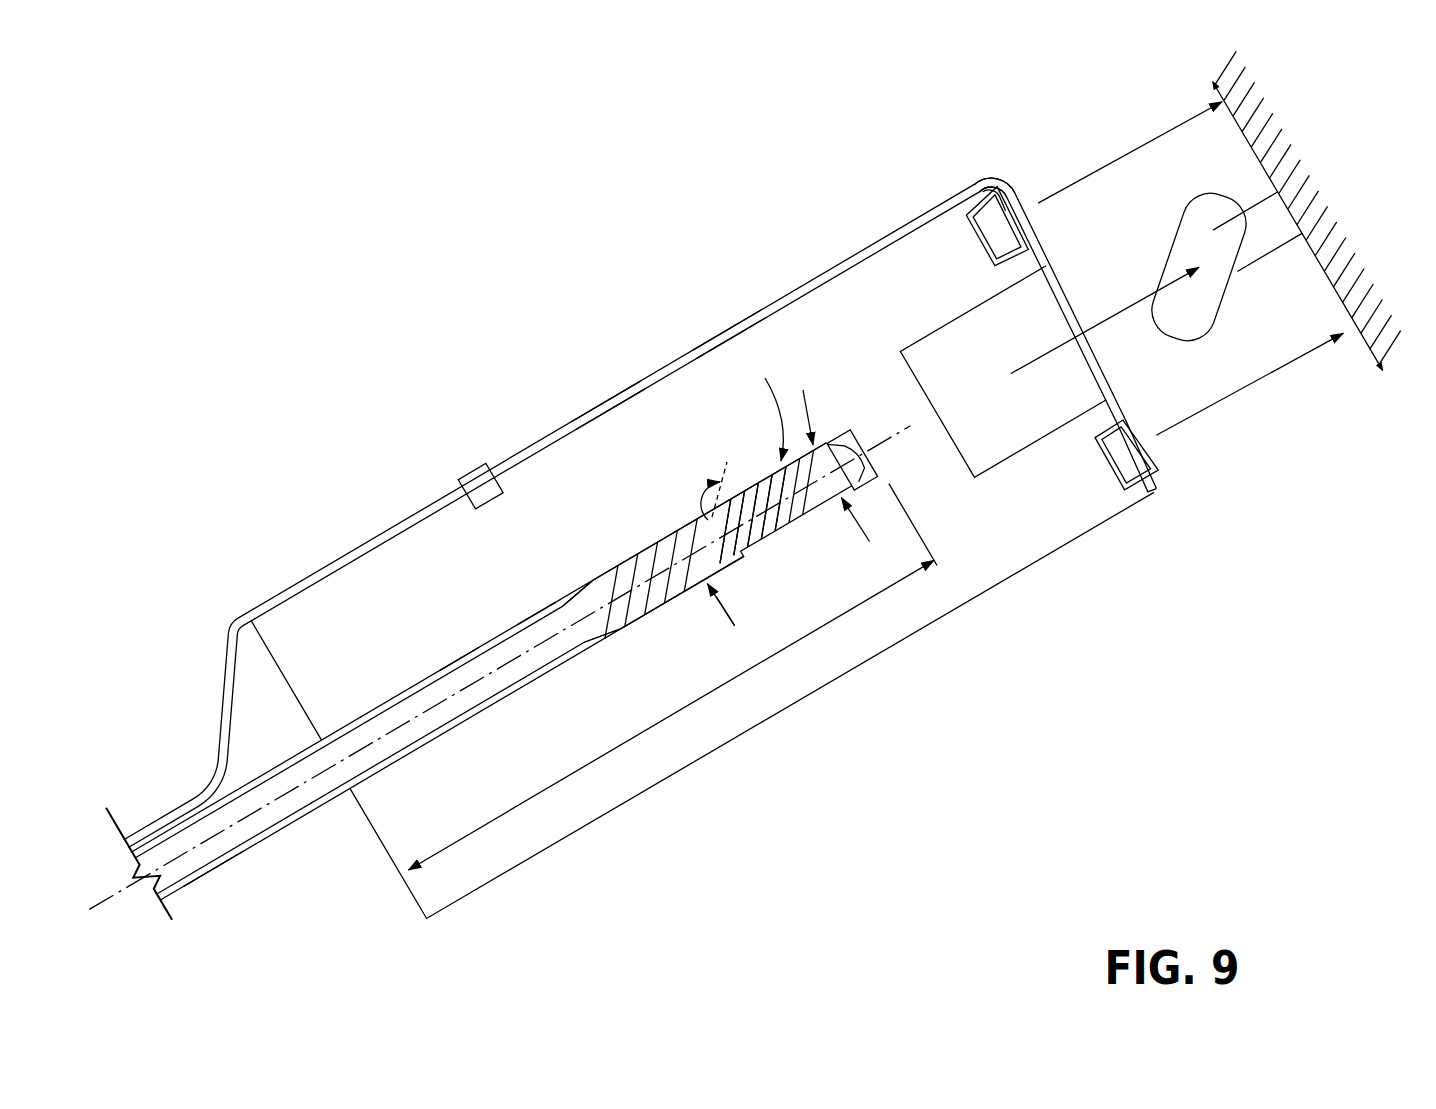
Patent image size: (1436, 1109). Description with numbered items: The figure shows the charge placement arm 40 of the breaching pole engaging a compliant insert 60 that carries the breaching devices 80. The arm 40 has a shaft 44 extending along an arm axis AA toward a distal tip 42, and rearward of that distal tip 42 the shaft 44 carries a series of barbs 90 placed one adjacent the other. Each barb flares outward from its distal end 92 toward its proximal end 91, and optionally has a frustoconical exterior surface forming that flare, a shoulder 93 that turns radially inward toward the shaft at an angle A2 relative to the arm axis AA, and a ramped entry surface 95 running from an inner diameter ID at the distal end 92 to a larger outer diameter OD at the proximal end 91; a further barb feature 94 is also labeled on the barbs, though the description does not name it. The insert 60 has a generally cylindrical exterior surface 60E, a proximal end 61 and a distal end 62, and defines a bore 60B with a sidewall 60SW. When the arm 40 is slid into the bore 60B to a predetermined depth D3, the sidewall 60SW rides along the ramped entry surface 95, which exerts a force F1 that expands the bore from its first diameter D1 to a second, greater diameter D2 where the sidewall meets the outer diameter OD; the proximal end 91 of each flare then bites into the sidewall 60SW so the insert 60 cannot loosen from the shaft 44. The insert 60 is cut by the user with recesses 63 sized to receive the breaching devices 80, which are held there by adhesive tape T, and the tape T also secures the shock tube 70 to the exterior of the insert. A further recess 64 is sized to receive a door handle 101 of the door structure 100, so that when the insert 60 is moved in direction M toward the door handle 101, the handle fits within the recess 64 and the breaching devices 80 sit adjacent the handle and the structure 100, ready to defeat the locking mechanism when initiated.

The charge placement arm 40 is at (290, 838).
The distal tip 42 is at (868, 460).
The shaft 44 is at (213, 870).
The insert 60 is at (848, 326).
The bore 60B is at (457, 660).
The exterior surface 60E is at (600, 413).
The sidewall 60SW is at (540, 616).
The proximal end 61 is at (267, 650).
The distal end 62 is at (1003, 176).
The recesses 63 is at (978, 231).
The recess 64 is at (1000, 427).
The shock tube 70 is at (712, 322).
The breaching device 80 is at (994, 222).
The barbs 90 is at (675, 528).
The proximal end 91 is at (761, 497).
The distal end 92 is at (795, 518).
The shoulder 93 is at (735, 484).
The thread flank 94 is at (748, 496).
The ramped entry surface 95 is at (772, 535).
The structure 100 is at (1378, 365).
The door handle 101 is at (1173, 217).
The direction M is at (1088, 328).
The adhesive tape T is at (466, 470).
The arm axis AA is at (117, 897).
The angle A2 is at (706, 501).
The first diameter D1 is at (812, 403).
The second diameter D2 is at (734, 627).
The predetermined depth D3 is at (741, 675).
The force F1 is at (766, 405).
The inner diameter ID is at (859, 542).
The outer diameter OD is at (734, 605).